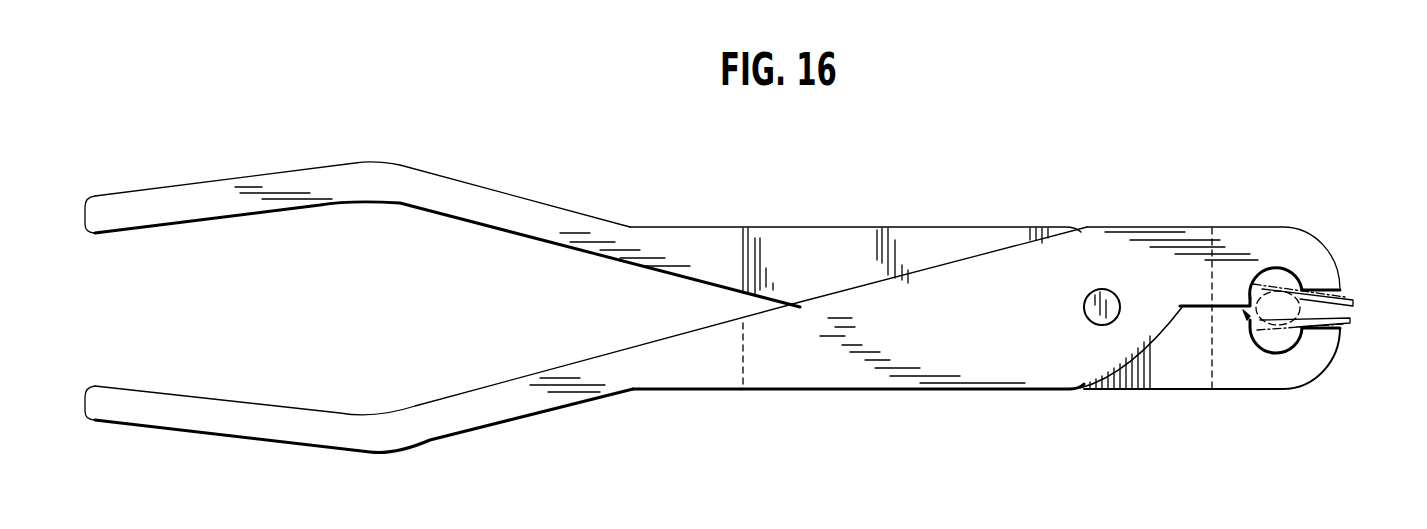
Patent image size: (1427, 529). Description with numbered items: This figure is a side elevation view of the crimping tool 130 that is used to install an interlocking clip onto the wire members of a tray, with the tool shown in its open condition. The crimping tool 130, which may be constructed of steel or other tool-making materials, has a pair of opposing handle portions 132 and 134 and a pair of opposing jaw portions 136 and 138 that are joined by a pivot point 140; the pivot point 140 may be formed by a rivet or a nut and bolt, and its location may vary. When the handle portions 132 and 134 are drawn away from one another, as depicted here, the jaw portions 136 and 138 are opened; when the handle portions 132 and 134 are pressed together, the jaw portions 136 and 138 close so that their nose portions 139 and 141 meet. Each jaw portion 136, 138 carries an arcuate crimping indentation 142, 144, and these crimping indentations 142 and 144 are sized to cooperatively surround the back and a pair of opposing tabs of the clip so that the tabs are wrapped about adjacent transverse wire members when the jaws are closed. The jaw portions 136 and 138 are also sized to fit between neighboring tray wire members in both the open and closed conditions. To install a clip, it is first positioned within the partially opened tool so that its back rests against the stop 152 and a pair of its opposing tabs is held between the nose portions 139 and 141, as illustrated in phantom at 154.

The crimping tool 130 is at (758, 168).
The handle portion 132 is at (268, 174).
The handle portion 134 is at (245, 438).
The jaw portion 136 is at (1222, 226).
The jaw portion 138 is at (1277, 392).
The nose portion 139 is at (1345, 288).
The pivot point 140 is at (1098, 326).
The nose portion 141 is at (1345, 330).
The arcuate crimping indentation 142 is at (1295, 280).
The arcuate crimping indentation 144 is at (1335, 360).
The stop 152 is at (1247, 316).
The interlocking clip shown in phantom 154 is at (1283, 275).